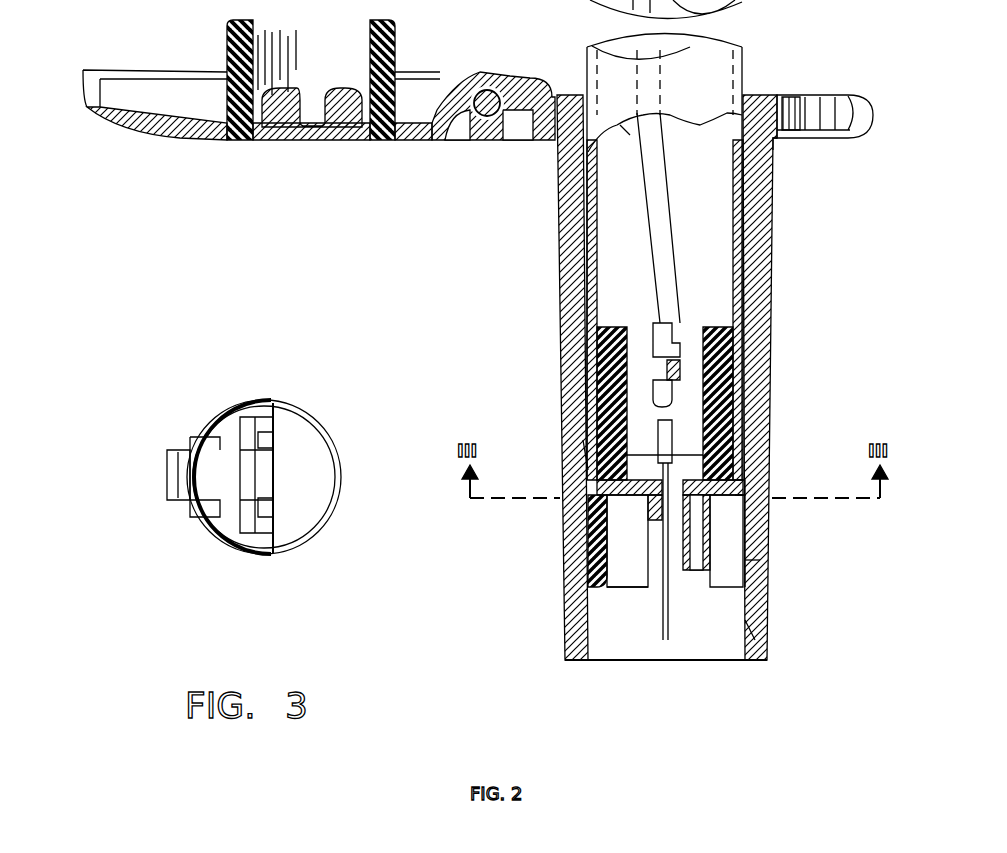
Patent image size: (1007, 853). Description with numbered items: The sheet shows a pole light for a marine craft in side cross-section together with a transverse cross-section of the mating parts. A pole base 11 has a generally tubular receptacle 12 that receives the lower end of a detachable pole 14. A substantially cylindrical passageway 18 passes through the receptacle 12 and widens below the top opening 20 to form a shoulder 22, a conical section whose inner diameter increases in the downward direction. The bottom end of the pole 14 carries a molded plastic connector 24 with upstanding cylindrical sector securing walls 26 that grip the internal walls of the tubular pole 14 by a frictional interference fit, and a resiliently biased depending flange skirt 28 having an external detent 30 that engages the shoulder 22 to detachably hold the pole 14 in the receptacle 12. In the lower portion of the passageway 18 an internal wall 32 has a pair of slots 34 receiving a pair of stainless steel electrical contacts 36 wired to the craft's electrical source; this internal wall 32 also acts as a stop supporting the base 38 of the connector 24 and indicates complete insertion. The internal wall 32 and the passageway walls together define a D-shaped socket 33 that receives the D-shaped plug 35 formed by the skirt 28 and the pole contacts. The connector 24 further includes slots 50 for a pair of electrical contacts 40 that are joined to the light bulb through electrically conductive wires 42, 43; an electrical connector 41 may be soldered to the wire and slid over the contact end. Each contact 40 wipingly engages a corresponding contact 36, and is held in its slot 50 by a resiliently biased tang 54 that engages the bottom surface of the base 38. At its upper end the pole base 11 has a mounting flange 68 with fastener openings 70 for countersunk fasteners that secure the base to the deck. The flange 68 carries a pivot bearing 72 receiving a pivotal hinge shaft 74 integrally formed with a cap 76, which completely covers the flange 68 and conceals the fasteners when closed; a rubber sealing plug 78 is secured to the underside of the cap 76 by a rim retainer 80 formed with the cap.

In FIG. 2, the pole base 11 is at (508, 200).
In FIG. 2, the receptacle 12 is at (760, 272).
In FIG. 2, the detachable pole 14 is at (720, 68).
In FIG. 3, the detachable pole 14 is at (340, 458).
In FIG. 2, the cylindrical passageway 18 is at (745, 512).
In FIG. 2, the top opening 20 is at (752, 100).
In FIG. 2, the shoulder 22 is at (750, 567).
In FIG. 2, the connector 24 is at (567, 507).
In FIG. 2, the cylindrical sector securing walls 26 is at (598, 402).
In FIG. 2, the depending flange skirt 28 is at (613, 572).
In FIG. 2, the external detent 30 is at (585, 568).
In FIG. 2, the internal wall 32 is at (760, 637).
In FIG. 3, the internal wall 32 is at (263, 473).
In FIG. 3, the D-shaped socket 33 is at (313, 500).
In FIG. 3, the slots 34 is at (275, 417).
In FIG. 2, the D-shaped plug 35 is at (630, 588).
In FIG. 2, the electrical contacts 36 is at (700, 617).
In FIG. 2, the base 38 is at (743, 490).
In FIG. 2, the electrical contacts 40 is at (693, 550).
In FIG. 2, the electrical connector 41 is at (658, 350).
In FIG. 2, the electrically conductive wire 42 is at (668, 250).
In FIG. 2, the electrically conductive wire 43 is at (670, 136).
In FIG. 2, the slots 50 is at (607, 460).
In FIG. 2, the resiliently biased tang 54 is at (650, 520).
In FIG. 2, the mounting flange 68 is at (787, 132).
In FIG. 2, the fastener openings 70 is at (852, 115).
In FIG. 2, the pivot bearing 72 is at (500, 118).
In FIG. 2, the pivotal hinge shaft 74 is at (480, 110).
In FIG. 2, the cap 76 is at (178, 125).
In FIG. 2, the rubber sealing plug 78 is at (390, 44).
In FIG. 2, the rim retainer 80 is at (348, 128).